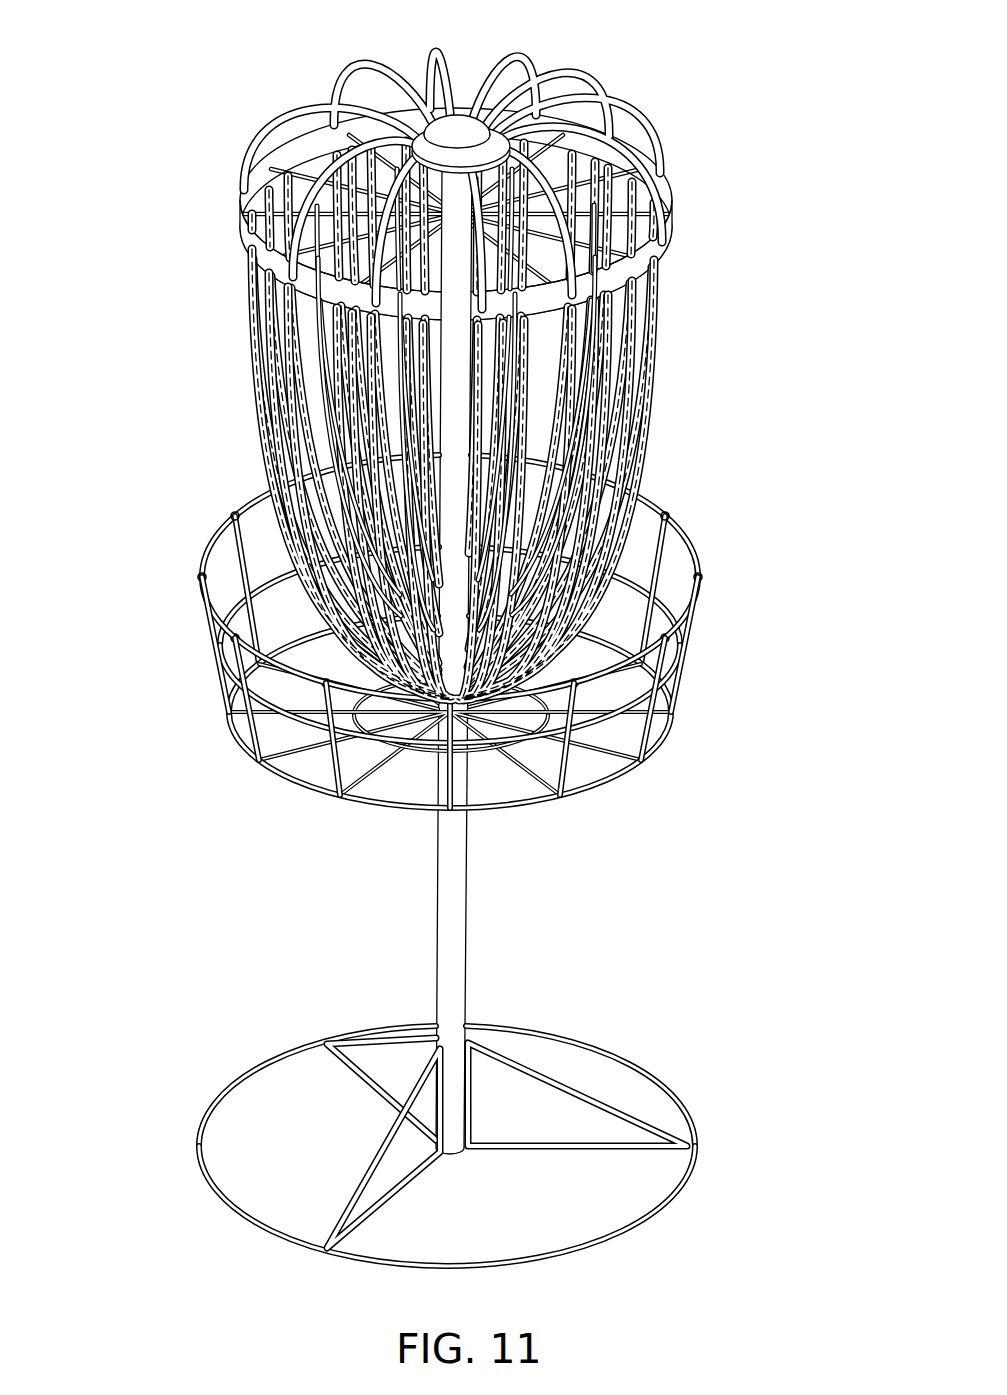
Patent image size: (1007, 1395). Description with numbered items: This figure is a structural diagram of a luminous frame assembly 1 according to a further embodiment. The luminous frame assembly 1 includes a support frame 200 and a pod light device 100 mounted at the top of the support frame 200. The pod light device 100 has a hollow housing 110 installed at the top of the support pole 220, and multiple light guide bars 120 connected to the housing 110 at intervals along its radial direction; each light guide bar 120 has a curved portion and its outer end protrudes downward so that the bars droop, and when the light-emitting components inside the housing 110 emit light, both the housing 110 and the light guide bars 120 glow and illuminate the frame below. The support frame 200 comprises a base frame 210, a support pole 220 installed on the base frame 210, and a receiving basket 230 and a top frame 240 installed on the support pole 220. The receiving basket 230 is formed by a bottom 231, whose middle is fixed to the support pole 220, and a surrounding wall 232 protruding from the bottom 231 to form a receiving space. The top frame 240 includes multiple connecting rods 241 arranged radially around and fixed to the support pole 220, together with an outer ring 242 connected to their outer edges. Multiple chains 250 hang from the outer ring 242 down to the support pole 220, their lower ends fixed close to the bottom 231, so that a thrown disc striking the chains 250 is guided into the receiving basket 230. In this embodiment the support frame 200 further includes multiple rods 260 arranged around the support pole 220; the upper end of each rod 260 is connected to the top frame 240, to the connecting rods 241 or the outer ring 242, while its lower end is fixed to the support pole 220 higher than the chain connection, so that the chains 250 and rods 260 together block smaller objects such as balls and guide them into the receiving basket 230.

The luminous frame assembly 1 is at (452, 633).
The pod light device 100 is at (413, 159).
The housing 110 is at (457, 132).
The light guide bars 120 is at (592, 79).
The support frame 200 is at (452, 687).
The base frame 210 is at (688, 1104).
The support pole 220 is at (443, 940).
The receiving basket 230 is at (523, 631).
The bottom 231 is at (790, 639).
The surrounding wall 232 is at (700, 651).
The top frame 240 is at (527, 214).
The connecting rods 241 is at (648, 236).
The outer ring 242 is at (570, 317).
The chains 250 is at (662, 386).
The rods 260 is at (640, 472).